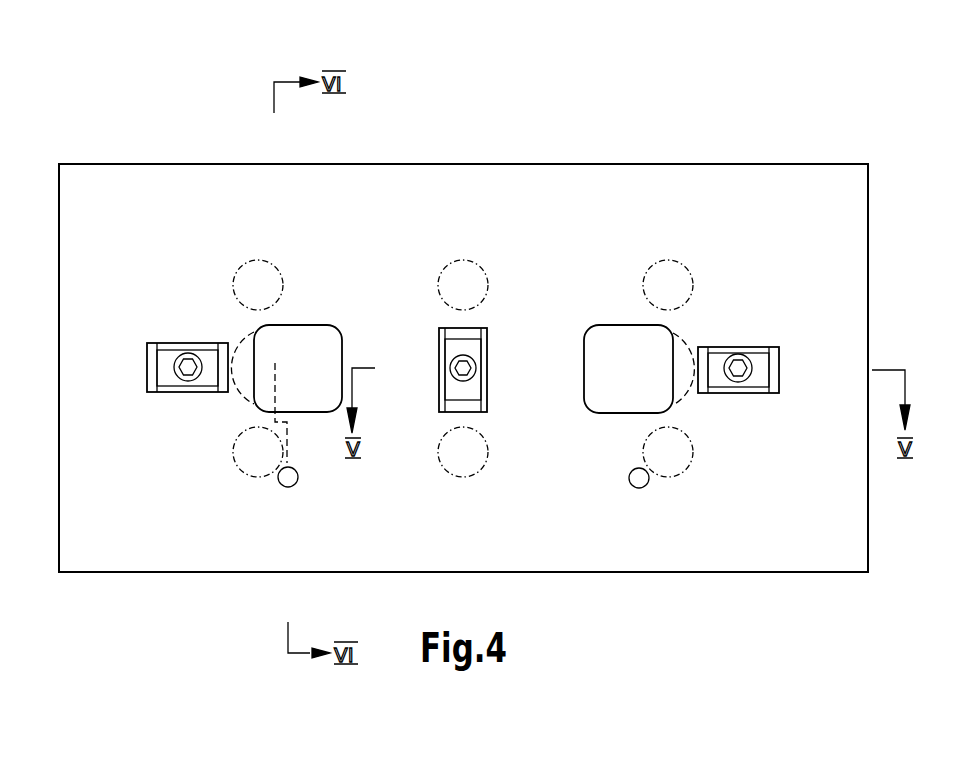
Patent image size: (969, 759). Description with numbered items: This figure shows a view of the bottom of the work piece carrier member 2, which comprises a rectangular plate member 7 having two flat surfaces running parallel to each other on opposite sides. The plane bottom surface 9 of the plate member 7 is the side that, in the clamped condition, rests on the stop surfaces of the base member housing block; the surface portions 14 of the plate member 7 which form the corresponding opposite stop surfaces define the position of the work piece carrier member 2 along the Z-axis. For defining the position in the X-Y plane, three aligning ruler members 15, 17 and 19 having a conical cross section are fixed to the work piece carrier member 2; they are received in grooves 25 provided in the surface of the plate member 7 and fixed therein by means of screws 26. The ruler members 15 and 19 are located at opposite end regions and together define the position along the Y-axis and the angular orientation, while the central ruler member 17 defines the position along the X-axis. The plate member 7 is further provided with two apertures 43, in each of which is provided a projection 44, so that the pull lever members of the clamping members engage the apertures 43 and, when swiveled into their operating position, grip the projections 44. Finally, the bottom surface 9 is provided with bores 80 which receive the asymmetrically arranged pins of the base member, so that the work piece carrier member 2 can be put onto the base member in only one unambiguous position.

The work piece carrier member 2 is at (46, 151).
The plate member 7 is at (50, 226).
The bottom surface 9 is at (110, 197).
The surface portions 14 is at (460, 280).
The aligning ruler member 15 is at (167, 373).
The aligning ruler member 17 is at (467, 393).
The aligning ruler member 19 is at (758, 380).
The grooves 25 is at (153, 366).
The screws 26 is at (187, 367).
The apertures 43 is at (310, 350).
The projection 44 is at (242, 362).
The bores 80 is at (285, 483).